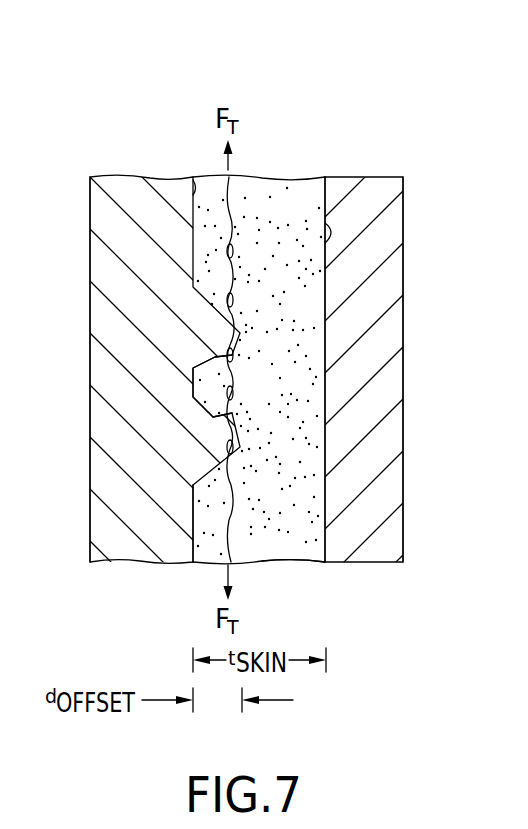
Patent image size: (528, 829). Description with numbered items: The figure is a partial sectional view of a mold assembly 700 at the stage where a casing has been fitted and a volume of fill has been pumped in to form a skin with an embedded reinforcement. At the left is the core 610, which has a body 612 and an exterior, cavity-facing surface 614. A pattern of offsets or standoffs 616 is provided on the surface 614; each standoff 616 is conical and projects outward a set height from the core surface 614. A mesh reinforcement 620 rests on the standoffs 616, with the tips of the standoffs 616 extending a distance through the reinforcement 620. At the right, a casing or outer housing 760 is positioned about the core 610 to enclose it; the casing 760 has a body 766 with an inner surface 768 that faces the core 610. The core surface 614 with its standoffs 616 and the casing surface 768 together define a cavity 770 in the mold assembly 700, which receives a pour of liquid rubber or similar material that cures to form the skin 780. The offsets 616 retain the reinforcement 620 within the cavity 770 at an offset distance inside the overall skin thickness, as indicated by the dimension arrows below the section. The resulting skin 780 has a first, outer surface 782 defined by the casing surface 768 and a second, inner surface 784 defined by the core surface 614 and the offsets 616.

The mold assembly 700 is at (284, 371).
The core 610 is at (113, 588).
The body 612 is at (122, 190).
The exterior surface 614 is at (194, 563).
The standoffs 616 is at (234, 358).
The reinforcement 620 is at (210, 156).
The casing 760 is at (430, 233).
The body 766 is at (371, 190).
The inner surface 768 is at (325, 188).
The cavity 770 is at (309, 591).
The skin 780 is at (284, 164).
The first surface 782 is at (333, 238).
The second surface 784 is at (193, 190).